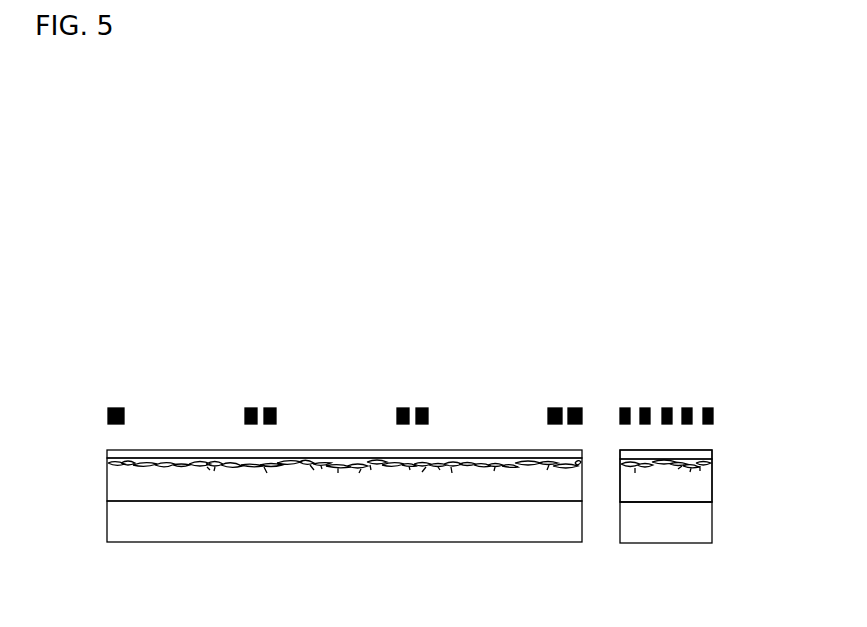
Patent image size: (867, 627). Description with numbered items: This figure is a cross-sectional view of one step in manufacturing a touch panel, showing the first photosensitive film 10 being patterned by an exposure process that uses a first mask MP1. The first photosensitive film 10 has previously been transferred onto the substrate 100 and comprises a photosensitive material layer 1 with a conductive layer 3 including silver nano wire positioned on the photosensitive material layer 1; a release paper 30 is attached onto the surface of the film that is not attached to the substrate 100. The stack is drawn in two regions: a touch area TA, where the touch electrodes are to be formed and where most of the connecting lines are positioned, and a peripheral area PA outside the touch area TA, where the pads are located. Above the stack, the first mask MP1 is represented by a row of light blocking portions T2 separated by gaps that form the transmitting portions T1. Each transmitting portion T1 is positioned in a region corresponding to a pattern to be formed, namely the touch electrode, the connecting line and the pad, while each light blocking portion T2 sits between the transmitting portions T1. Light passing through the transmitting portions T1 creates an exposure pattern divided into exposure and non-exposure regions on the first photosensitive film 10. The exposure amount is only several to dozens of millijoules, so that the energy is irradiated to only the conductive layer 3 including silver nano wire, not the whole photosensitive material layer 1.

The first mask MP1 is at (90, 412).
The transmitting portion T1 is at (192, 408).
The light blocking portion T2 is at (249, 398).
The release paper 30 is at (712, 450).
The conductive layer 3 is at (712, 462).
The photosensitive material layer 1 is at (712, 488).
The first photosensitive film 10 is at (769, 448).
The substrate 100 is at (712, 535).
The touch area TA is at (582, 561).
The peripheral area PA is at (712, 561).